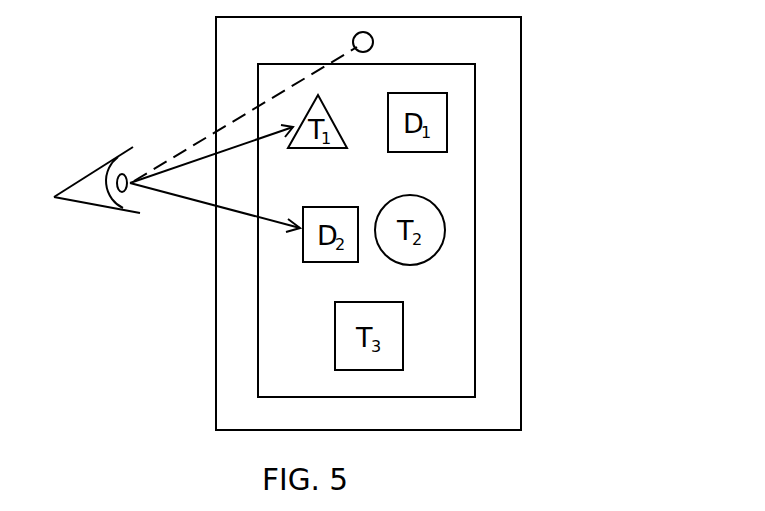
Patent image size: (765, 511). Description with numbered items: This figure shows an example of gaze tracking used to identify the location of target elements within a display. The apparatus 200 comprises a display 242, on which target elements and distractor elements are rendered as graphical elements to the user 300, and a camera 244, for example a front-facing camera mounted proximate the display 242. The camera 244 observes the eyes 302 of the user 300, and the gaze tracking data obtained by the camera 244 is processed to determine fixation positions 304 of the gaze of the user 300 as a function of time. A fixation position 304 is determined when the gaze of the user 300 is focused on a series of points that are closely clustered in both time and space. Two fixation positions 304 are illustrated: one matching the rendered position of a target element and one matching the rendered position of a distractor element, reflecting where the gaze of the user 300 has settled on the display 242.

The apparatus 200 is at (521, 151).
The display 242 is at (475, 312).
The camera 244 is at (373, 39).
The user 300 is at (100, 298).
The eyes 302 is at (93, 207).
The fixation positions 304 is at (272, 152).